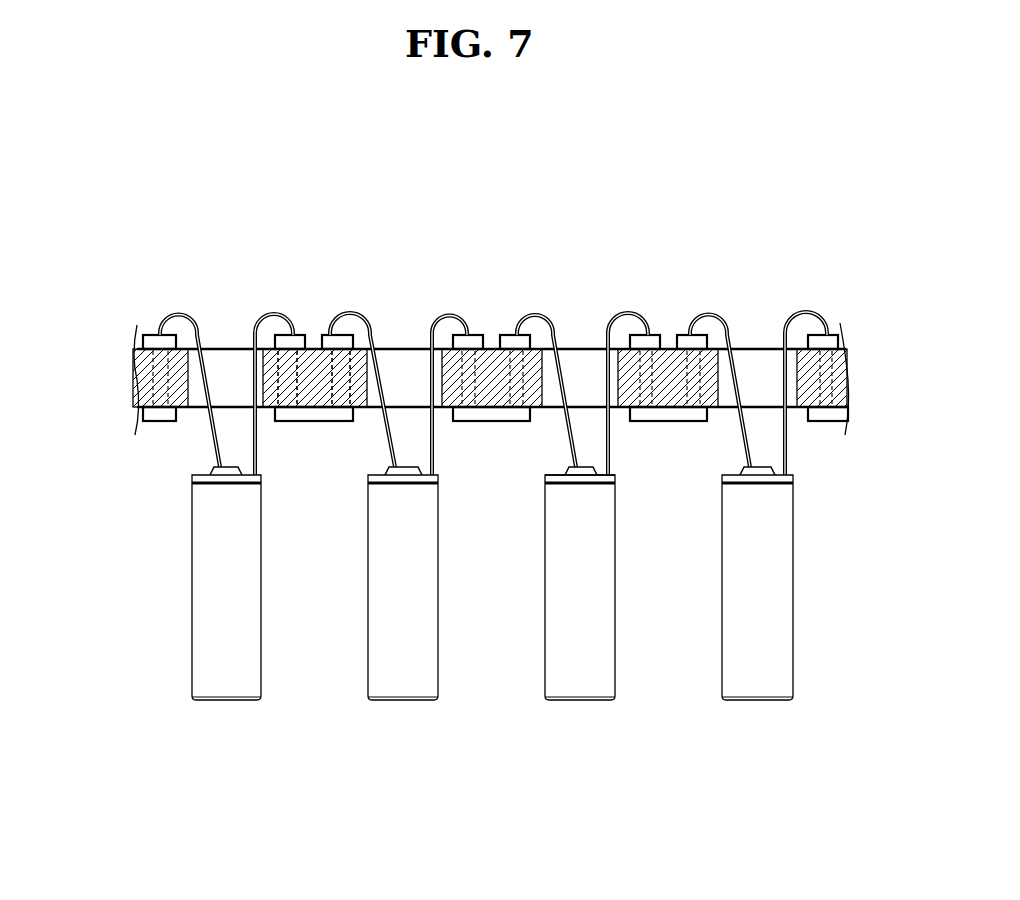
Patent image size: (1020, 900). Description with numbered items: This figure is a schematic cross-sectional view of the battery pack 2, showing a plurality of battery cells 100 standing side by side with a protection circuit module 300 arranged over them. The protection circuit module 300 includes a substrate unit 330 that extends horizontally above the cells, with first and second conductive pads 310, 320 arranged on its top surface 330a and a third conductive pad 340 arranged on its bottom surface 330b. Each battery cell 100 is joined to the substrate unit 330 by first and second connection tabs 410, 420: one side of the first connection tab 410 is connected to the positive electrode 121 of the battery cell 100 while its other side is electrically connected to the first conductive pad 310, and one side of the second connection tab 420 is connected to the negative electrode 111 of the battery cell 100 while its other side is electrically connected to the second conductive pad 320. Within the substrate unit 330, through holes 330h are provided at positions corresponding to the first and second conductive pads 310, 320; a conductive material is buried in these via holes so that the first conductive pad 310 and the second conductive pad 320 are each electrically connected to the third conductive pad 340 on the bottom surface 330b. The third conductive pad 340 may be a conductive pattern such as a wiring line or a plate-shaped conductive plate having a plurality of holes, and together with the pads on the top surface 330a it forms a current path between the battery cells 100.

The battery pack 2 is at (838, 135).
The battery cell 100 is at (225, 705).
The negative electrode 111 is at (600, 467).
The positive electrode 121 is at (560, 467).
The protection circuit module 300 is at (733, 262).
The first conductive pad 310 is at (330, 333).
The second conductive pad 320 is at (301, 333).
The substrate unit 330 is at (55, 325).
The top surface 330a is at (143, 349).
The bottom surface 330b is at (143, 407).
The through hole 330h is at (366, 372).
The third conductive pad 340 is at (494, 421).
The first connection tab 410 is at (180, 315).
The second connection tab 420 is at (268, 315).